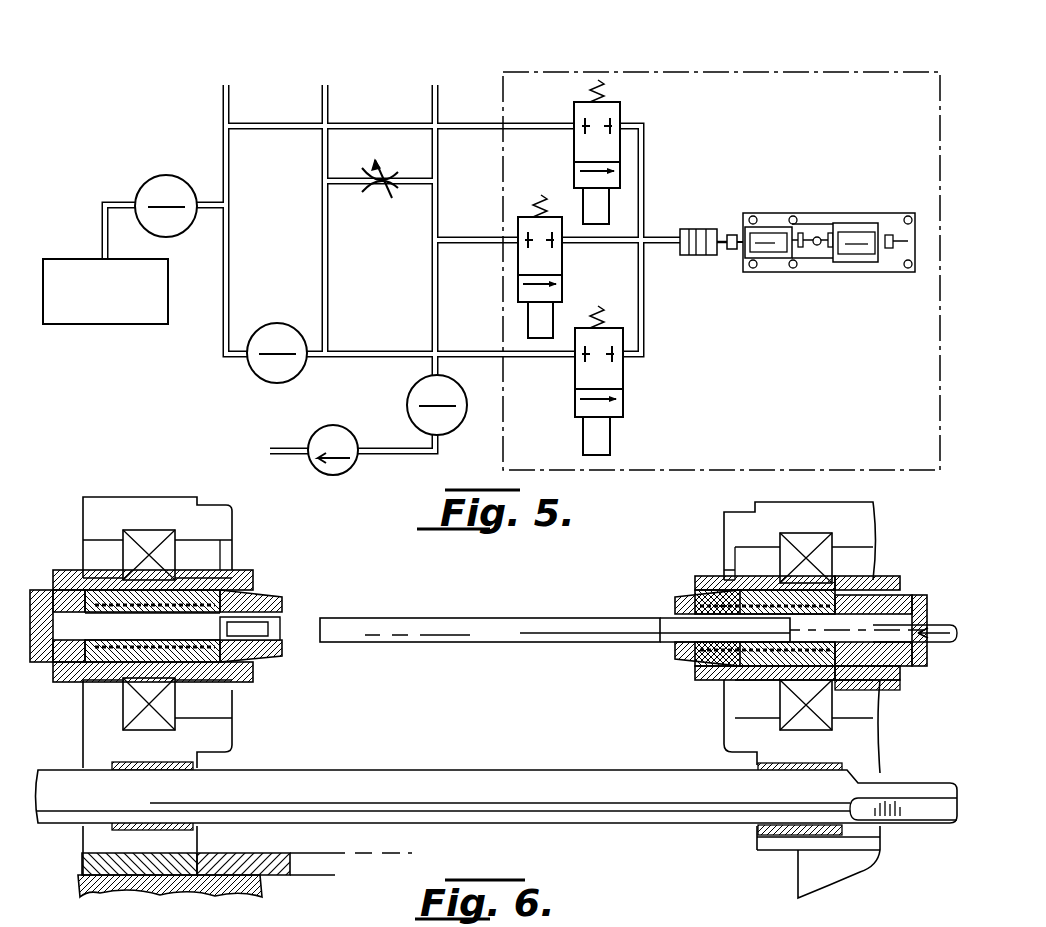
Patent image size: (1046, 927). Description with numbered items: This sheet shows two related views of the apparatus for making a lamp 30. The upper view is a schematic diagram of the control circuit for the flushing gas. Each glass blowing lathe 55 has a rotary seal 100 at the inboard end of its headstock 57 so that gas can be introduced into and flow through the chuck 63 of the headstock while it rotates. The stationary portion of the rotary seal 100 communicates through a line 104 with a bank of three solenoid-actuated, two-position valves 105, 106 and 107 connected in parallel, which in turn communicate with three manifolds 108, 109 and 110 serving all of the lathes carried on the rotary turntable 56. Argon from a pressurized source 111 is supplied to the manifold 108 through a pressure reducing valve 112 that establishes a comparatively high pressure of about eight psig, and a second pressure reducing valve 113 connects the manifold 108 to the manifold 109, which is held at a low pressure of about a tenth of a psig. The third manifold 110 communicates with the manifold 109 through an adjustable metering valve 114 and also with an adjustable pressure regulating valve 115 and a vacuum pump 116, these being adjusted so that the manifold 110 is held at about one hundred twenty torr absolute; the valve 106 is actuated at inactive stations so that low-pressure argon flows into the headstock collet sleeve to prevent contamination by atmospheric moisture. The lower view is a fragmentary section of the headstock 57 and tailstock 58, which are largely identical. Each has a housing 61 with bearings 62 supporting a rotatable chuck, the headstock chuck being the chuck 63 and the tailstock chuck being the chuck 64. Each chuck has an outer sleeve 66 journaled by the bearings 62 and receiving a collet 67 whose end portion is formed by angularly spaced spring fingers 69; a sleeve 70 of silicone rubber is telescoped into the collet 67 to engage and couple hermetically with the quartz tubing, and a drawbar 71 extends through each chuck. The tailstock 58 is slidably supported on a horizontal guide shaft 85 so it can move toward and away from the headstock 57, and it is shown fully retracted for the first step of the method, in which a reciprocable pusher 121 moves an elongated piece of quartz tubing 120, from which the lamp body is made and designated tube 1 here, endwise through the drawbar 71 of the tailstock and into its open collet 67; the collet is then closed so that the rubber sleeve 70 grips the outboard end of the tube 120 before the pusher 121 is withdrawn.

In FIG. 6, the workpiece rod 1 is at (510, 719).
In FIG. 5, the lamp 30 is at (824, 224).
In FIG. 5, the horizontal glass blowing lathe 55 is at (829, 240).
In FIG. 5, the rotary turntable 56 is at (757, 72).
In FIG. 5, the headstock 57 is at (770, 264).
In FIG. 6, the headstock 57 is at (254, 552).
In FIG. 5, the tailstock 58 is at (872, 261).
In FIG. 6, the housing 61 is at (86, 499).
In FIG. 6, the bearings 62 is at (145, 530).
In FIG. 6, the chuck of the headstock 63 is at (250, 684).
In FIG. 6, the chuck of the tailstock 64 is at (691, 578).
In FIG. 6, the outer sleeve 66 is at (228, 706).
In FIG. 6, the collet 67 is at (200, 590).
In FIG. 6, the spring fingers 69 is at (286, 598).
In FIG. 6, the sleeve of silicone rubber 70 is at (224, 580).
In FIG. 6, the drawbar 71 is at (46, 590).
In FIG. 6, the guide shaft 85 is at (380, 776).
In FIG. 5, the rotary seal 100 is at (710, 226).
In FIG. 5, the line 104 is at (664, 247).
In FIG. 5, the solenoid-actuated two-position valve 105 is at (622, 110).
In FIG. 5, the solenoid-actuated two-position valve 106 is at (626, 380).
In FIG. 5, the solenoid-actuated two-position valve 107 is at (564, 262).
In FIG. 5, the manifold 108 is at (232, 170).
In FIG. 5, the manifold 109 is at (322, 235).
In FIG. 5, the manifold 110 is at (432, 292).
In FIG. 5, the pressurized source 111 is at (122, 324).
In FIG. 5, the pressure reducing valve 112 is at (164, 175).
In FIG. 5, the second pressure reducing valve 113 is at (278, 323).
In FIG. 5, the adjustable metering valve 114 is at (375, 196).
In FIG. 5, the adjustable pressure regulating valve 115 is at (408, 399).
In FIG. 5, the vacuum pump 116 is at (312, 435).
In FIG. 6, the piece of quartz tubing 120 is at (582, 618).
In FIG. 6, the reciprocable pusher 121 is at (938, 652).